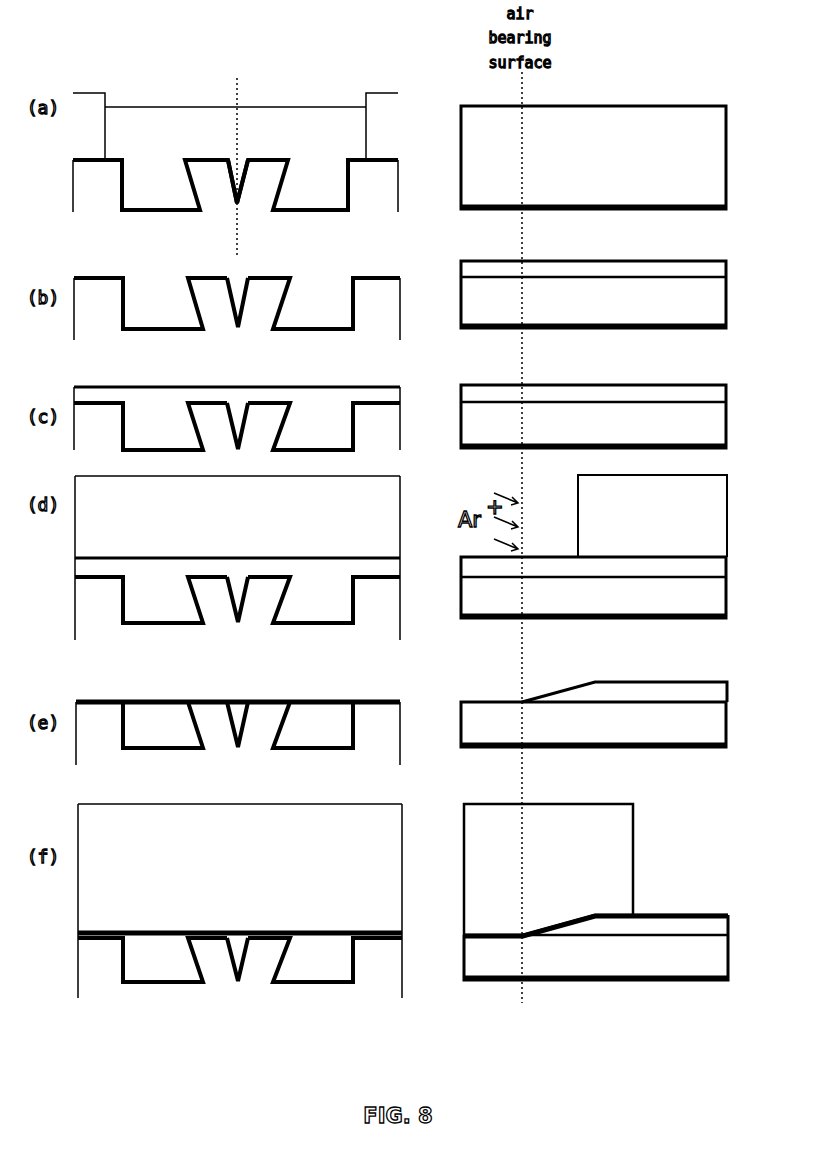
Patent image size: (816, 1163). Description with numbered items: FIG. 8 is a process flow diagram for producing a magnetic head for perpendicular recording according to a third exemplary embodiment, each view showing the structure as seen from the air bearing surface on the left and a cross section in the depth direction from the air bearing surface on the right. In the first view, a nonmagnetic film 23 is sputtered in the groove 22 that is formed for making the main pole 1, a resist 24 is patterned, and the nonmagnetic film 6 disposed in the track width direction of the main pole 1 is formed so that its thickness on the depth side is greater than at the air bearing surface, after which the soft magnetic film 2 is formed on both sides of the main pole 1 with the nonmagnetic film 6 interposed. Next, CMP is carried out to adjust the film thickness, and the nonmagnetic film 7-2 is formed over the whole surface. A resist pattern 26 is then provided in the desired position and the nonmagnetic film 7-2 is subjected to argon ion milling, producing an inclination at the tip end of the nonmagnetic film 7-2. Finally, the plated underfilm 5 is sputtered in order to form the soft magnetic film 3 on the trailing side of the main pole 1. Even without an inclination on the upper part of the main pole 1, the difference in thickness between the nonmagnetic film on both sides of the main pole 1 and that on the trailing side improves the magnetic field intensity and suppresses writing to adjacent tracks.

The main pole 1 is at (238, 190).
The soft magnetic film 2 is at (313, 205).
The soft magnetic film 3 is at (392, 820).
The plated underfilm 5 is at (402, 936).
The nonmagnetic film 6 is at (252, 197).
The nonmagnetic film 7-2 is at (337, 395).
The groove 22 is at (373, 185).
The nonmagnetic film 23 is at (123, 181).
The resist 24 is at (93, 100).
The resist pattern 26 is at (383, 493).